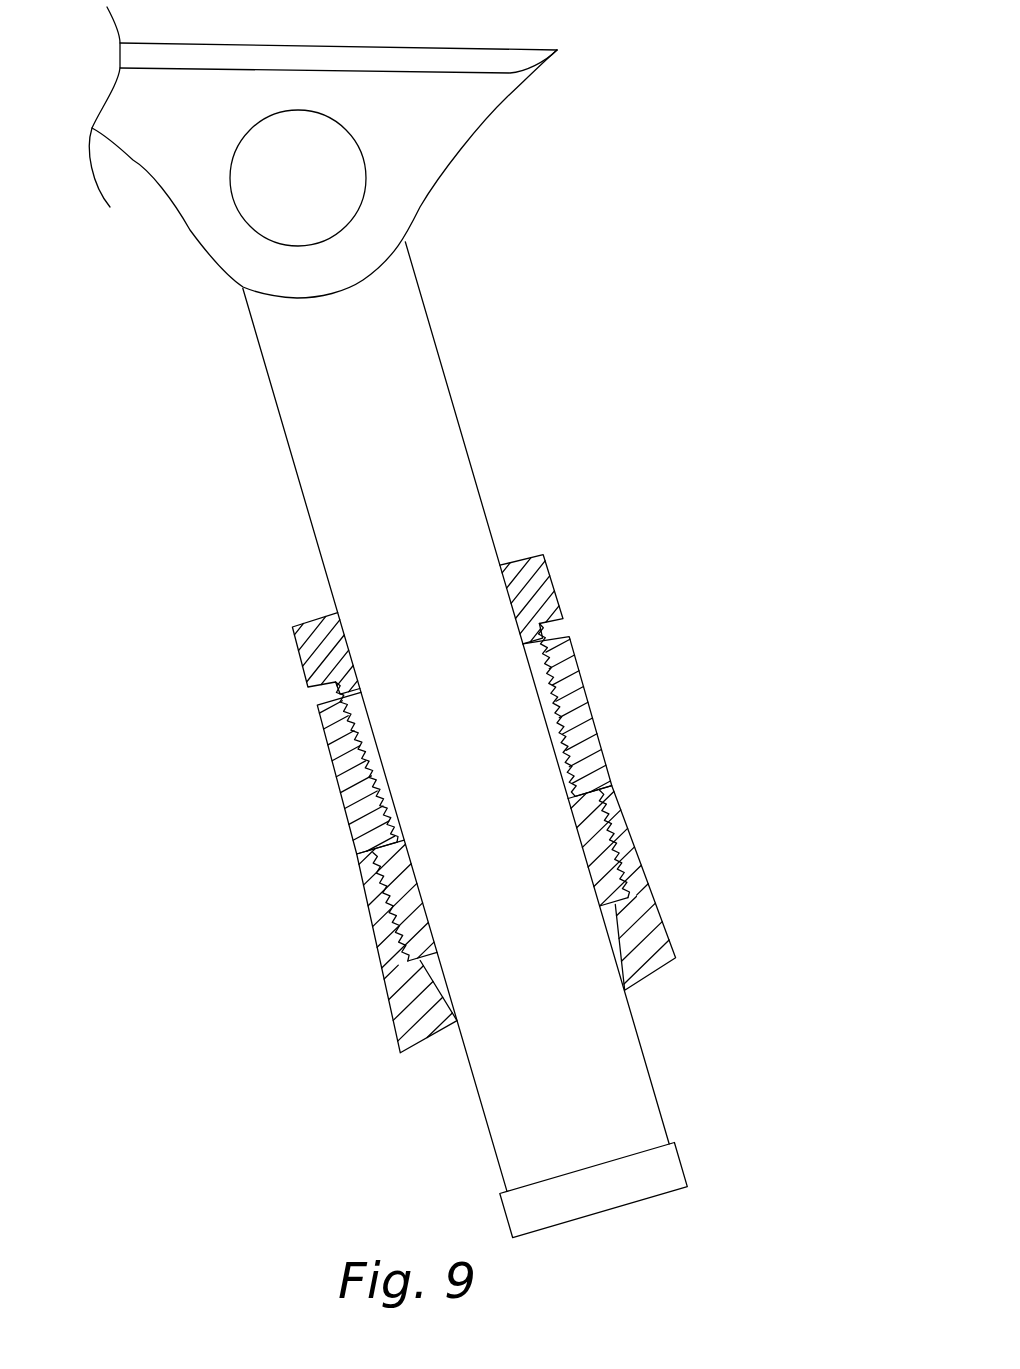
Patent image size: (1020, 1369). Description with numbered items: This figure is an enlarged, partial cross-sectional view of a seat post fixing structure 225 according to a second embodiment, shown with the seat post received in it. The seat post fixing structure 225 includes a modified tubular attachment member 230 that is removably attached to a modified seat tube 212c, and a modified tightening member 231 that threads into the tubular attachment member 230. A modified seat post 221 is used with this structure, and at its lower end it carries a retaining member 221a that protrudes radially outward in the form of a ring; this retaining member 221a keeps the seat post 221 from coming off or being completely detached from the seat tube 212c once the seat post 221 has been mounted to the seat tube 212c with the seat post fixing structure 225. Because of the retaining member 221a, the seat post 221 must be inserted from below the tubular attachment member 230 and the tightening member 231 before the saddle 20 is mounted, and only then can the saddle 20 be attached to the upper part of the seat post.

The saddle 20 is at (433, 117).
The seat post 221 is at (430, 393).
The retaining member 221a is at (595, 1182).
The seat post fixing structure 225 is at (612, 645).
The tubular attachment member 230 is at (574, 748).
The tightening member 231 is at (545, 556).
The seat tube 212c is at (627, 873).